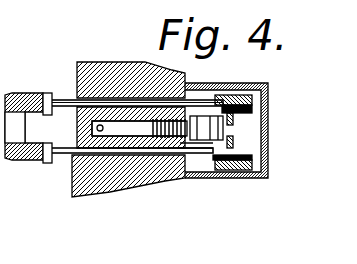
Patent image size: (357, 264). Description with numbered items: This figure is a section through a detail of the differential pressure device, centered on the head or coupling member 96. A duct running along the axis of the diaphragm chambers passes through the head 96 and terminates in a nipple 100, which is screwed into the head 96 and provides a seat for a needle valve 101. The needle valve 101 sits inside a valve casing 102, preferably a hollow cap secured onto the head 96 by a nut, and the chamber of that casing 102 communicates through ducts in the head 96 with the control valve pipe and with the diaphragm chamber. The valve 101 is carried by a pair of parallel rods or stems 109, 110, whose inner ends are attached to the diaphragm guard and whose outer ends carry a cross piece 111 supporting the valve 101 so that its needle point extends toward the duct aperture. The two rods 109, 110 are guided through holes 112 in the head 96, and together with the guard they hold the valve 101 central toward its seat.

The head or coupling member 96 is at (123, 194).
The nipple 100 is at (30, 93).
The needle valve 101 is at (208, 180).
The valve casing 102 is at (268, 128).
The rod or stem 109 is at (64, 99).
The rod or stem 110 is at (65, 157).
The cross piece 111 is at (238, 140).
The holes 112 is at (138, 73).